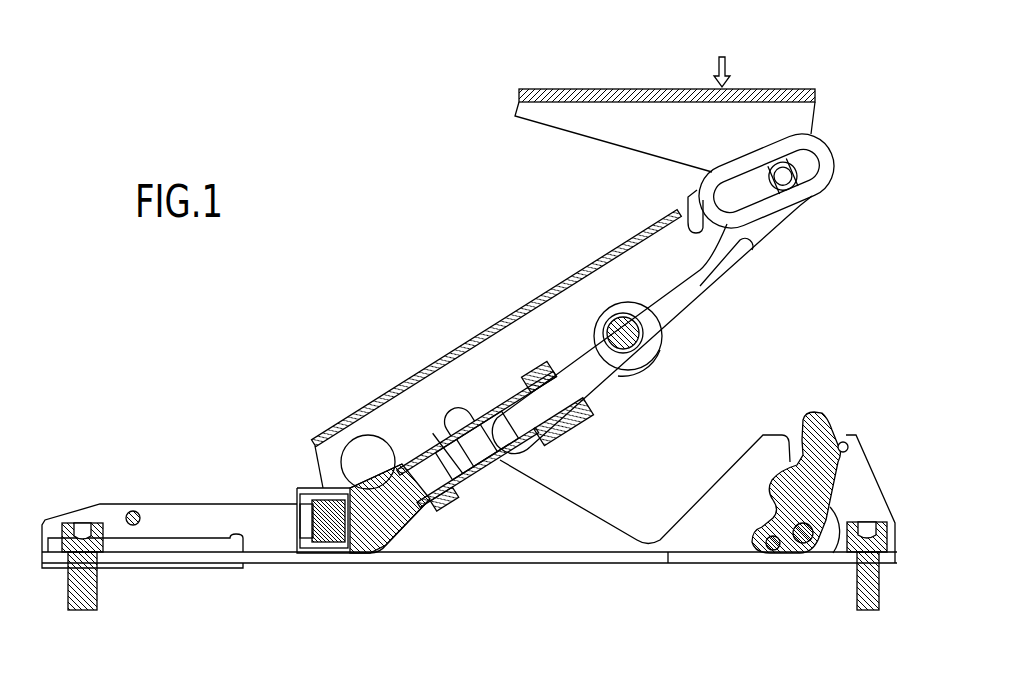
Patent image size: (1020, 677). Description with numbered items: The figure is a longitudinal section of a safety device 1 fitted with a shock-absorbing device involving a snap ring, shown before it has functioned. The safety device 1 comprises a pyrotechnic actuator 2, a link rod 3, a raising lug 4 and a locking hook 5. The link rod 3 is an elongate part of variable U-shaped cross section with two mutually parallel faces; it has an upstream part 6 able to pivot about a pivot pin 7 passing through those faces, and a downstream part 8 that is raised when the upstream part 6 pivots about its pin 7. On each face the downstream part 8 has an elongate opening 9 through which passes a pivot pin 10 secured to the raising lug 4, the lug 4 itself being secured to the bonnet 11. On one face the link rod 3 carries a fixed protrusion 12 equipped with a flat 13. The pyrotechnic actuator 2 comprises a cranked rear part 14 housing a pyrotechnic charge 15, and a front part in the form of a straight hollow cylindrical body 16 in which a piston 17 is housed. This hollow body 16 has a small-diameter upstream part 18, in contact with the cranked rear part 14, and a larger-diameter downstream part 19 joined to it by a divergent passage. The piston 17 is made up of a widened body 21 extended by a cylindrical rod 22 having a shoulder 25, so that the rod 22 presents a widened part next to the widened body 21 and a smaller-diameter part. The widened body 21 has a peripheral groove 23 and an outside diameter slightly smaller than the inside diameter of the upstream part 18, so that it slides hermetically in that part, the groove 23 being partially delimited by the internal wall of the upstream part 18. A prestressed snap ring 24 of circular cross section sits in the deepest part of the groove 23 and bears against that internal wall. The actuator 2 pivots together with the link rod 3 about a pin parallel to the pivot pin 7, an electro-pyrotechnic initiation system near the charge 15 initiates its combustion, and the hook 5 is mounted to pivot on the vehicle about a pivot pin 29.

The safety device 1 is at (417, 337).
The pyrotechnic actuator 2 is at (432, 425).
The link rod 3 is at (556, 302).
The raising lug 4 is at (676, 130).
The locking hook 5 is at (825, 412).
The upstream part 6 is at (327, 445).
The pivot pin 7 is at (366, 460).
The downstream part 8 is at (762, 234).
The elongate opening 9 is at (697, 199).
The pivot pin 10 is at (790, 185).
The bonnet 11 is at (597, 100).
The fixed protrusion 12 is at (662, 336).
The flat 13 is at (608, 335).
The cranked rear part 14 is at (352, 565).
The pyrotechnic charge 15 is at (300, 505).
The straight hollow cylindrical body 16 is at (550, 425).
The piston 17 is at (636, 372).
The small-diameter upstream part 18 is at (445, 500).
The larger-diameter downstream part 19 is at (520, 372).
The widened body 21 is at (473, 455).
The cylindrical rod 22 is at (707, 278).
The peripheral groove 23 is at (470, 430).
The prestressed snap ring 24 is at (448, 425).
The shoulder 25 is at (622, 316).
The pivot pin 29 is at (805, 545).